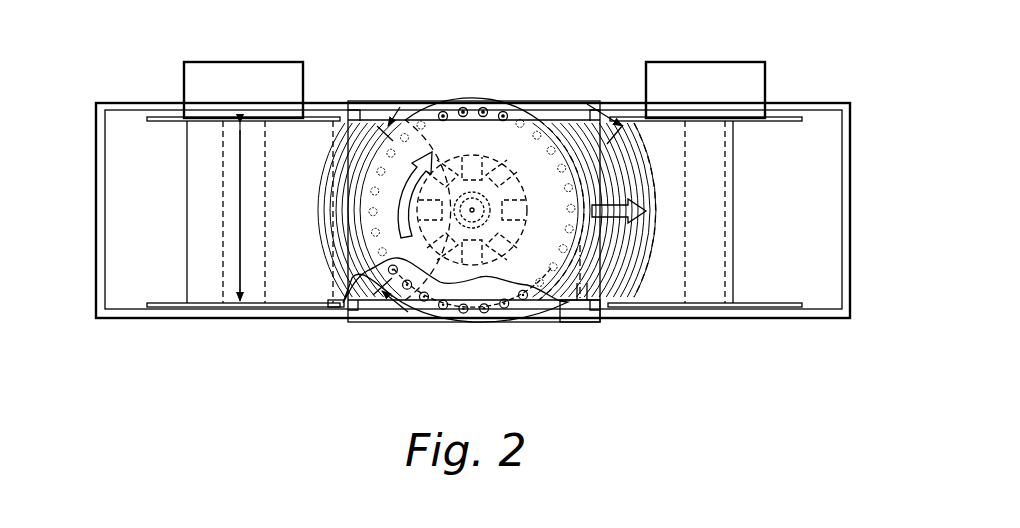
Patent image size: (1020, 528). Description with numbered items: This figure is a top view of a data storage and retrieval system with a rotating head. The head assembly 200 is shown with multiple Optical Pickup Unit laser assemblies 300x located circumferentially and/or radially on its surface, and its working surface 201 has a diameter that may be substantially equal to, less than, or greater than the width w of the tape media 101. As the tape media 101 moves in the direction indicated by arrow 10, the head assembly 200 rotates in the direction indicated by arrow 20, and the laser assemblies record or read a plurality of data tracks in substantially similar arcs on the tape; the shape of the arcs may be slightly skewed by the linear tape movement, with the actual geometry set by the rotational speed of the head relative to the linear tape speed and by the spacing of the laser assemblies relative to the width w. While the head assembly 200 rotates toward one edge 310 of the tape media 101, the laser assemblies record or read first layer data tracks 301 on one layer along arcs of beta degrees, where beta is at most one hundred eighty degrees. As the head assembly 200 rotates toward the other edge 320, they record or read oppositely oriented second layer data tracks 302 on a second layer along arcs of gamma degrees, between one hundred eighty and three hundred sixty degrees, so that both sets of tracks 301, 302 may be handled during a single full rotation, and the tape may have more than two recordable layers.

The other edge of the tape media 320 is at (295, 122).
The Optical Pickup Unit laser assemblies 300x is at (503, 112).
The working surface 201 is at (530, 120).
The arrow indicating tape movement direction 10 is at (612, 203).
The arrow indicating head assembly rotation direction 20 is at (402, 194).
The second layer data tracks 302 is at (335, 210).
The width of tape w is at (240, 213).
The tape media 101 is at (278, 278).
The one edge of the tape media 310 is at (296, 303).
The head assembly 200 is at (479, 326).
The first layer data tracks 301 is at (580, 300).